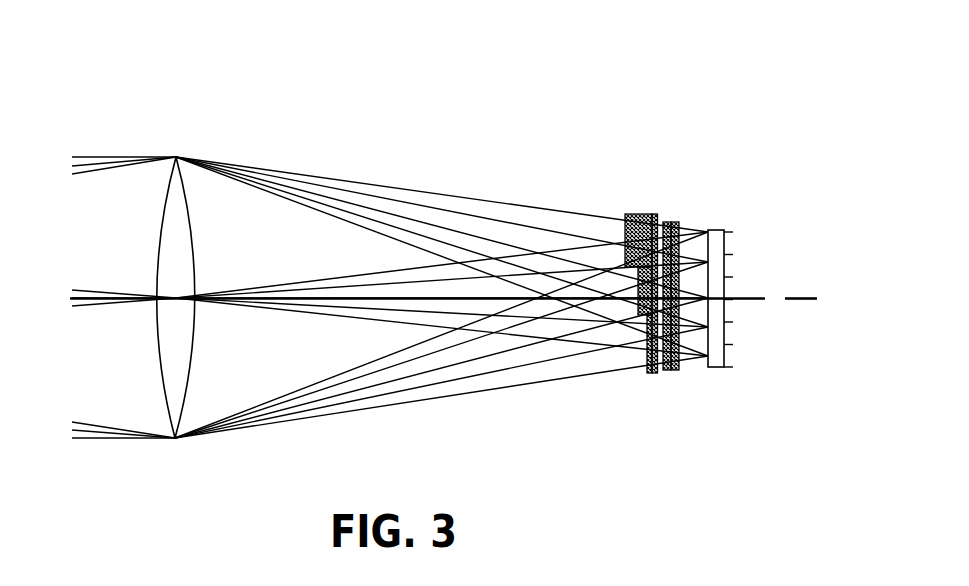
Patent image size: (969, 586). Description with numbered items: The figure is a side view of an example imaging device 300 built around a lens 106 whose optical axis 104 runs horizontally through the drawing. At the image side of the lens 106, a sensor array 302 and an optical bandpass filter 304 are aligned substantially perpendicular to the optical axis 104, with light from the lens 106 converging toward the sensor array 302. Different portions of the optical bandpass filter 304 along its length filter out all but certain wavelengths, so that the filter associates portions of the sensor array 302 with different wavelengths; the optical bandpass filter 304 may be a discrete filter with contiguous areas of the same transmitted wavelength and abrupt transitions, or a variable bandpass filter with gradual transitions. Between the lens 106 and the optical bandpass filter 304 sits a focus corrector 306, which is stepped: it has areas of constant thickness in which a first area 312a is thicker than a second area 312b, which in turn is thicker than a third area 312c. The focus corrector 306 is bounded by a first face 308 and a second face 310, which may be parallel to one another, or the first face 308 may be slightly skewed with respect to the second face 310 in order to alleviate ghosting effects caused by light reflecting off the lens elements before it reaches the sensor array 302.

The imaging device 300 is at (178, 67).
The optical axis 104 is at (787, 295).
The lens 106 is at (158, 258).
The sensor array 302 is at (727, 368).
The optical bandpass filter 304 is at (677, 369).
The focus corrector 306 is at (653, 213).
The first face 308 is at (640, 370).
The second face 310 is at (667, 371).
The first area 312a is at (630, 214).
The second area 312b is at (641, 214).
The third area 312c is at (648, 214).